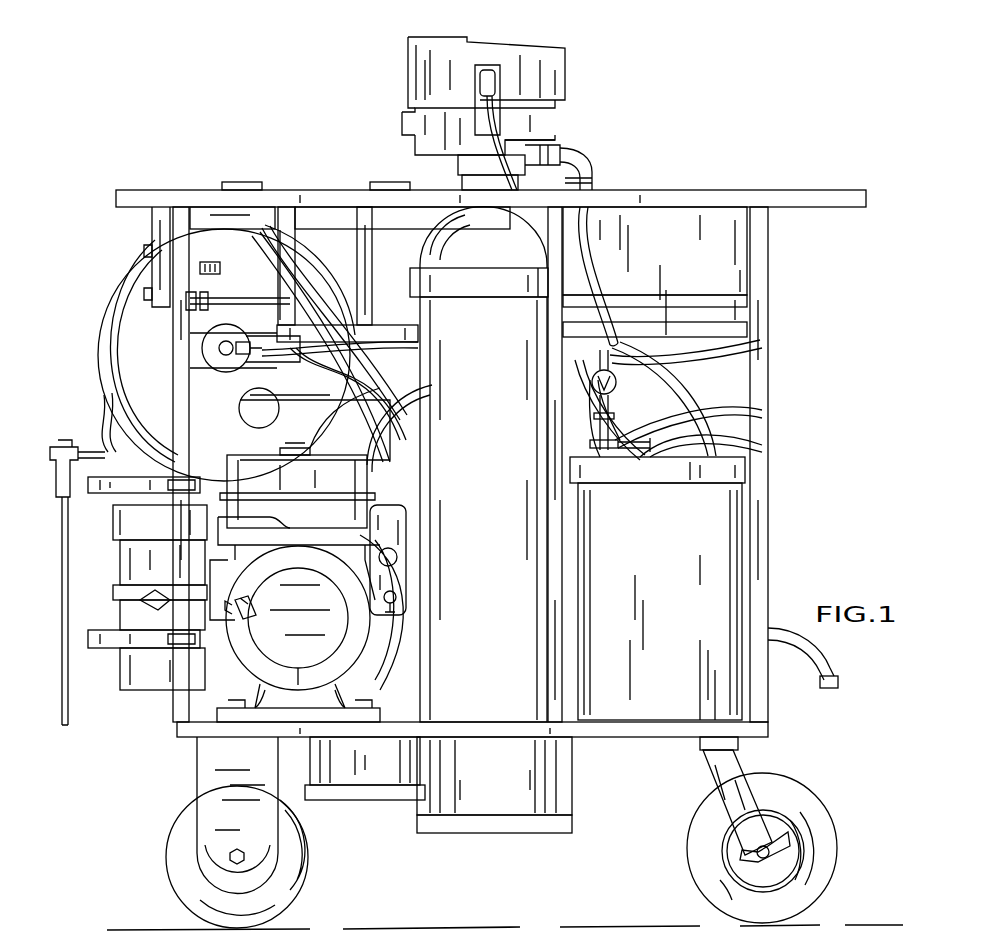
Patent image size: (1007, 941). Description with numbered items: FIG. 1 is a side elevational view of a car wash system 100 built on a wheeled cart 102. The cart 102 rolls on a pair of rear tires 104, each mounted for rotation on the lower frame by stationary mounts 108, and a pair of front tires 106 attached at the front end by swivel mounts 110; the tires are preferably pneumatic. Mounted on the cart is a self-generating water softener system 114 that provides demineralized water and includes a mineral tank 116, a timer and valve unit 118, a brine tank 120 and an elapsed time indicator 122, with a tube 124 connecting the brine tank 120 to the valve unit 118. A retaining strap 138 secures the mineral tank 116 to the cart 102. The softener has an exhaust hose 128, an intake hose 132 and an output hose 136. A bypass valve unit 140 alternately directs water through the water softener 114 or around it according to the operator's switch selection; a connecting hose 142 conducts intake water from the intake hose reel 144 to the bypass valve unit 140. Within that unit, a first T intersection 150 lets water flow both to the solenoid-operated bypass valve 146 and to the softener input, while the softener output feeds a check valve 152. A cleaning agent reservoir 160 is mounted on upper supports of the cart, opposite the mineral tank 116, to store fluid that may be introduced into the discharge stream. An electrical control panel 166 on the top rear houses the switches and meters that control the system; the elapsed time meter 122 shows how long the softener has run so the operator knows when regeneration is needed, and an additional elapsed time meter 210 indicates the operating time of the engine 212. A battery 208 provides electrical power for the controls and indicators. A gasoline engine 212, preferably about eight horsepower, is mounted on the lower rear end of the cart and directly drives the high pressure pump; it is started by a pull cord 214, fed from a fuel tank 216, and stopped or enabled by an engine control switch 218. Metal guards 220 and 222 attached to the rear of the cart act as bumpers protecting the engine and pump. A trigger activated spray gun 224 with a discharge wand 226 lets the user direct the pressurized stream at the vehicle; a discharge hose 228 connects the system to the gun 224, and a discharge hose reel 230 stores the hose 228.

The car wash system 100 is at (760, 52).
The wheeled cart 102 is at (800, 190).
The rear tires 104 is at (164, 862).
The front tires 106 is at (838, 850).
The stationary mounts 108 is at (196, 776).
The swivel mounts 110 is at (703, 752).
The self-generating water softener system 114 is at (400, 215).
The mineral tank 116 is at (502, 797).
The timer and valve unit 118 is at (548, 45).
The brine tank 120 is at (710, 580).
The elapsed time indicator 122 is at (252, 185).
The tube 124 is at (545, 120).
The exhaust hose 128 is at (612, 470).
The intake hose 132 is at (700, 350).
The output hose 136 is at (590, 282).
The retaining strap 138 is at (476, 305).
The bypass valve unit 140 is at (680, 398).
The connecting hose 142 is at (735, 438).
The intake hose reel 144 is at (692, 427).
The bypass valve 146 is at (616, 384).
The first T intersection 150 is at (620, 470).
The check valve 152 is at (603, 470).
The cleaning agent reservoir 160 is at (693, 215).
The electrical control panel 166 is at (140, 252).
The battery 208 is at (380, 795).
The additional elapsed time meter 210 is at (208, 258).
The gasoline engine 212 is at (268, 660).
The pull cord 214 is at (288, 612).
The fuel tank 216 is at (235, 520).
The engine control switch 218 is at (408, 585).
The metal guard 220 is at (90, 493).
The metal guard 222 is at (108, 690).
The trigger activated spray gun 224 is at (62, 447).
The discharge wand 226 is at (68, 556).
The discharge hose 228 is at (102, 400).
The discharge hose reel 230 is at (115, 282).